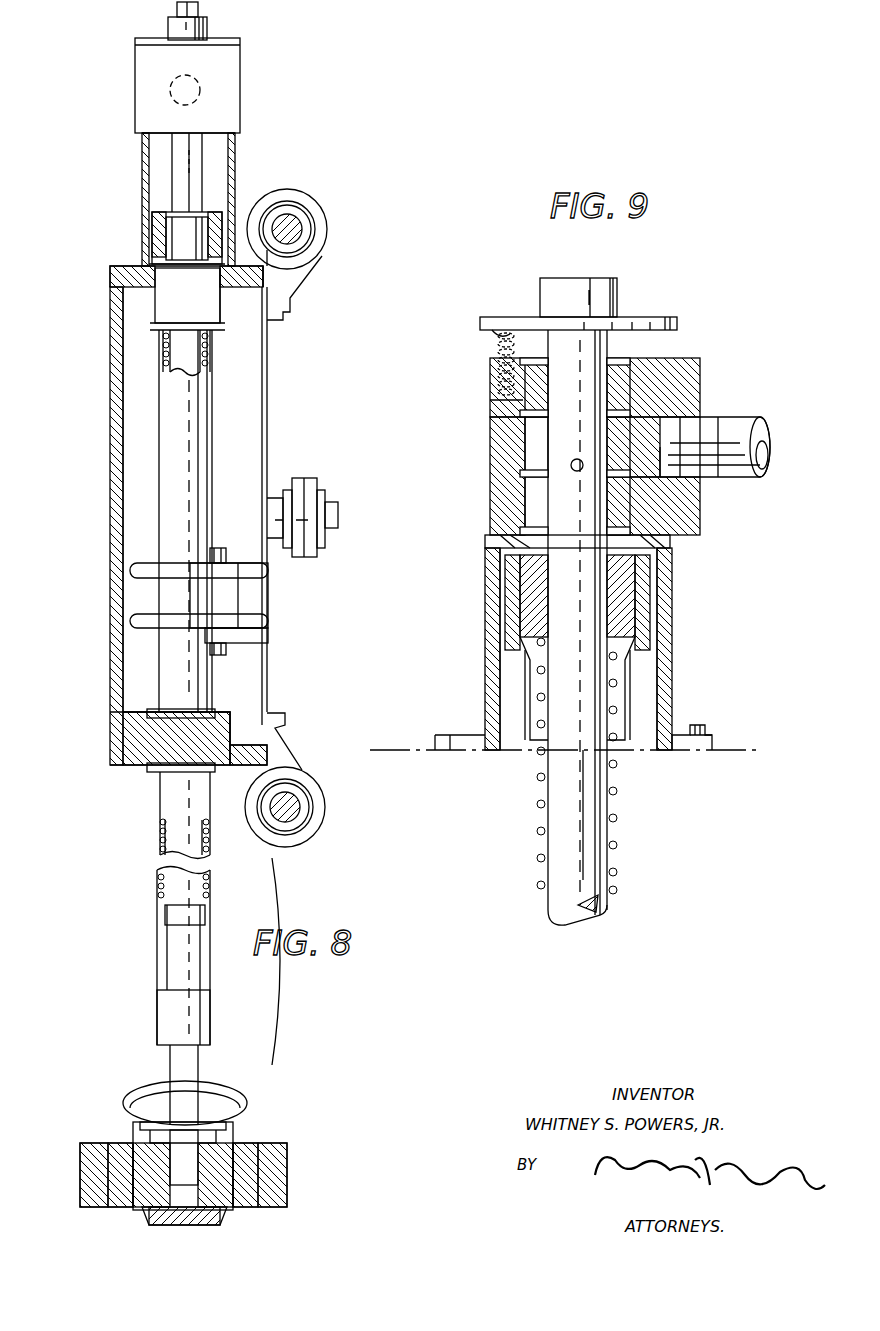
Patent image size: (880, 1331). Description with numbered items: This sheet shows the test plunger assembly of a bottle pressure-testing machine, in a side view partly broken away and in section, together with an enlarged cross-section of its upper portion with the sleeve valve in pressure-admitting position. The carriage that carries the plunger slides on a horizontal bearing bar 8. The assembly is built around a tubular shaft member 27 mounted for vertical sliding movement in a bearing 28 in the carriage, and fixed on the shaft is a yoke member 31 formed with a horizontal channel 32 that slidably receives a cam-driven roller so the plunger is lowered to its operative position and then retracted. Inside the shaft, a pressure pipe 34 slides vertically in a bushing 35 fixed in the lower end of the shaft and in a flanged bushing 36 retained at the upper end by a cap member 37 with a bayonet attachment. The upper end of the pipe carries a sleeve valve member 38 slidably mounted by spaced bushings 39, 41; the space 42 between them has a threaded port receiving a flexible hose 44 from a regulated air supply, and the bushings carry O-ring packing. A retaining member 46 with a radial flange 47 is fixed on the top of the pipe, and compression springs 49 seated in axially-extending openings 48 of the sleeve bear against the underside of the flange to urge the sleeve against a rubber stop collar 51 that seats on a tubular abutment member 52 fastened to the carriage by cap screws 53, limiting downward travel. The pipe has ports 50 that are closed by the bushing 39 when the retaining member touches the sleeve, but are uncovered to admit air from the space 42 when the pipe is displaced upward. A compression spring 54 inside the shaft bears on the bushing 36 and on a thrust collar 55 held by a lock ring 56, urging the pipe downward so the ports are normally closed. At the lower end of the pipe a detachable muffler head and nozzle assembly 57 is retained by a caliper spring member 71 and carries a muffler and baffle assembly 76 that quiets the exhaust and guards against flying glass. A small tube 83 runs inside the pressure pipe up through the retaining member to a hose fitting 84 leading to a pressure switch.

In FIG. 8, the horizontal bearing bar 8 is at (287, 229).
In FIG. 8, the tubular shaft member 27 is at (195, 434).
In FIG. 8, the bearing 28 is at (158, 303).
In FIG. 8, the yoke member 31 is at (250, 630).
In FIG. 8, the horizontal channel 32 is at (250, 590).
In FIG. 8, the pressure pipe 34 is at (178, 833).
In FIG. 9, the pressure pipe 34 is at (560, 798).
In FIG. 8, the bushing 35 is at (178, 1011).
In FIG. 8, the flanged bushing 36 is at (181, 243).
In FIG. 9, the flanged bushing 36 is at (522, 594).
In FIG. 8, the cap member 37 is at (172, 212).
In FIG. 8, the sleeve valve member 38 is at (135, 92).
In FIG. 9, the sleeve valve member 38 is at (490, 392).
In FIG. 9, the bushing 39 is at (533, 498).
In FIG. 9, the bushing 41 is at (525, 400).
In FIG. 9, the space 42 is at (533, 448).
In FIG. 9, the flexible hose 44 is at (728, 422).
In FIG. 9, the retaining member 46 is at (617, 285).
In FIG. 9, the radial flange 47 is at (662, 317).
In FIG. 9, the axially-extending opening 48 is at (494, 362).
In FIG. 9, the compression spring 49 is at (500, 333).
In FIG. 9, the port 50 is at (577, 471).
In FIG. 9, the rubber stop collar 51 is at (485, 540).
In FIG. 8, the tubular abutment member 52 is at (142, 166).
In FIG. 9, the tubular abutment member 52 is at (672, 610).
In FIG. 9, the cap screw 53 is at (695, 722).
In FIG. 8, the compression spring 54 is at (210, 340).
In FIG. 9, the compression spring 54 is at (618, 810).
In FIG. 8, the thrust collar 55 is at (192, 915).
In FIG. 8, the lock ring 56 is at (178, 928).
In FIG. 8, the muffler head and nozzle assembly 57 is at (252, 1140).
In FIG. 8, the caliper spring member 71 is at (206, 1092).
In FIG. 8, the muffler and baffle assembly 76 is at (345, 1172).
In FIG. 8, the small tube 83 is at (200, 172).
In FIG. 8, the hose fitting 84 is at (177, 11).